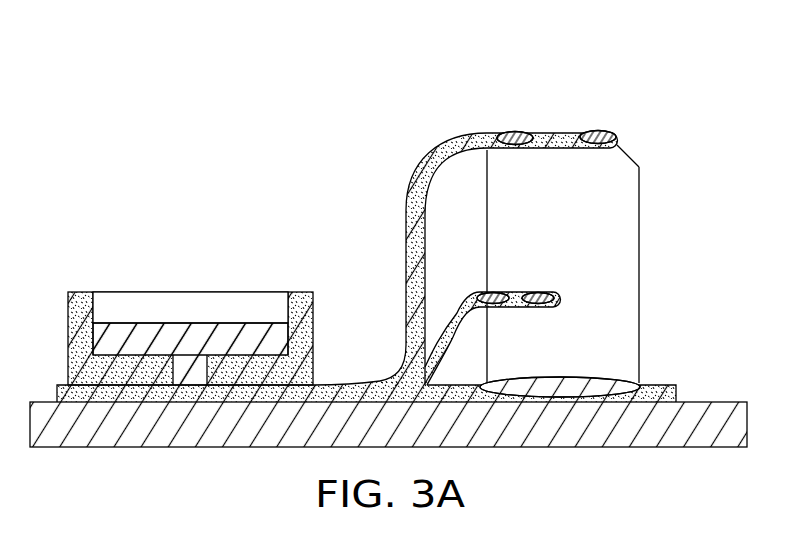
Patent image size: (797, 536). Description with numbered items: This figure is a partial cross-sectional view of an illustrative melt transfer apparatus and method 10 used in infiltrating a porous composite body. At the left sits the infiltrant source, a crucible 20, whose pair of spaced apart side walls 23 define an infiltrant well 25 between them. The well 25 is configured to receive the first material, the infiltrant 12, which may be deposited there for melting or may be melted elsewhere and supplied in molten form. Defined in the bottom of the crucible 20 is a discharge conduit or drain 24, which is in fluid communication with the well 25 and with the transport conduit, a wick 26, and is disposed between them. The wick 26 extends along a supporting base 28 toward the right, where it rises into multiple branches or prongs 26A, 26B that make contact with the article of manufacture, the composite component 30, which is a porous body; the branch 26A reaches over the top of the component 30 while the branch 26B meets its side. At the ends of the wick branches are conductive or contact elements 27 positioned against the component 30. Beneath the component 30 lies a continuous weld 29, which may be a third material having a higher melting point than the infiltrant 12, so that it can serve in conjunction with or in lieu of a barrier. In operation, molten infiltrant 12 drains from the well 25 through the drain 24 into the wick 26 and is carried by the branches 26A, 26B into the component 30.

The apparatus and method 10 is at (394, 265).
The infiltrant 12 is at (170, 323).
The crucible 20 is at (218, 360).
The side walls 23 is at (78, 290).
The discharge conduit 24 is at (173, 362).
The infiltrant well 25 is at (212, 303).
The wick 26 is at (660, 385).
The wick branch 26A is at (452, 147).
The wick branch 26B is at (465, 293).
The conductive elements 27 is at (512, 133).
The substrate 28 is at (715, 398).
The continuous weld 29 is at (572, 378).
The component 30 is at (642, 212).